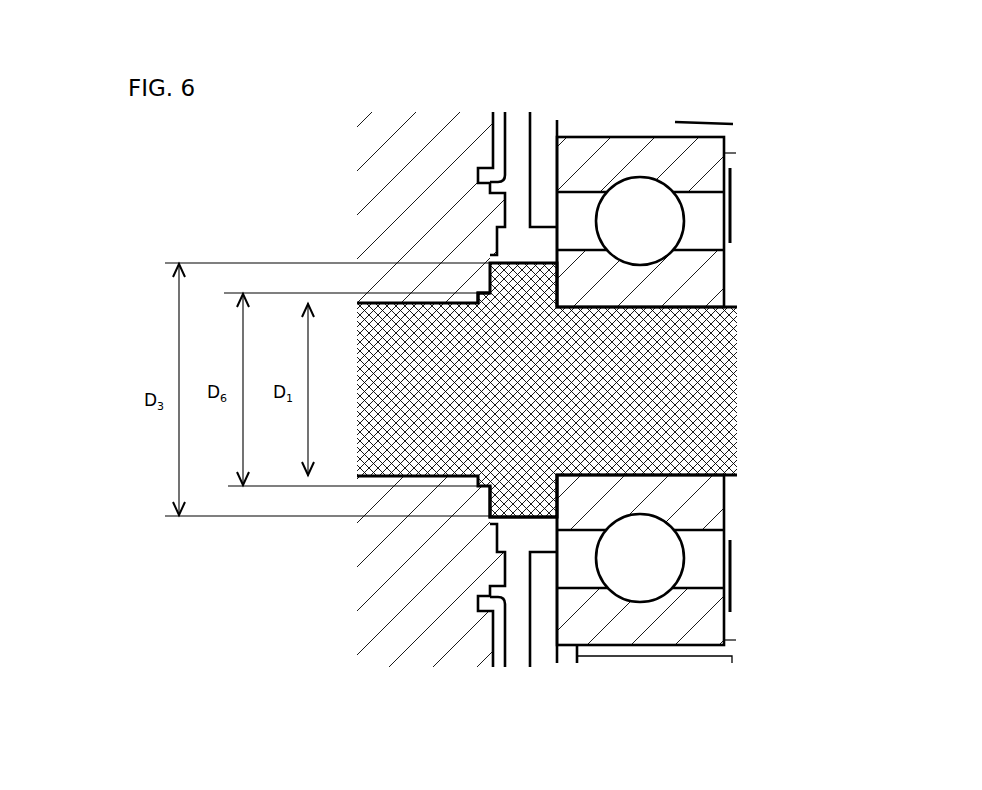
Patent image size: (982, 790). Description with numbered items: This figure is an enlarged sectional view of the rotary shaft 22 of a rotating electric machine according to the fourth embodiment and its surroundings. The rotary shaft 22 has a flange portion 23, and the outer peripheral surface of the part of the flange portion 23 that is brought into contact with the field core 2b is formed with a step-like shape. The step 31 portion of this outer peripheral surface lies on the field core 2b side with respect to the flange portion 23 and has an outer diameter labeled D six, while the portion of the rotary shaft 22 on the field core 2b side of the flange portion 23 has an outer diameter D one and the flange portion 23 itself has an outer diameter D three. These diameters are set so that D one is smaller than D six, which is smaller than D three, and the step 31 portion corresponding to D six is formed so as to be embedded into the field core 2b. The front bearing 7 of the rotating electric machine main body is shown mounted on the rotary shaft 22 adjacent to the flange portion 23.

The field core 2b is at (417, 237).
The rotary shaft 22 is at (703, 425).
The step portion 31 is at (478, 292).
The flange portion 23 is at (515, 492).
The front bearing 7 is at (703, 296).